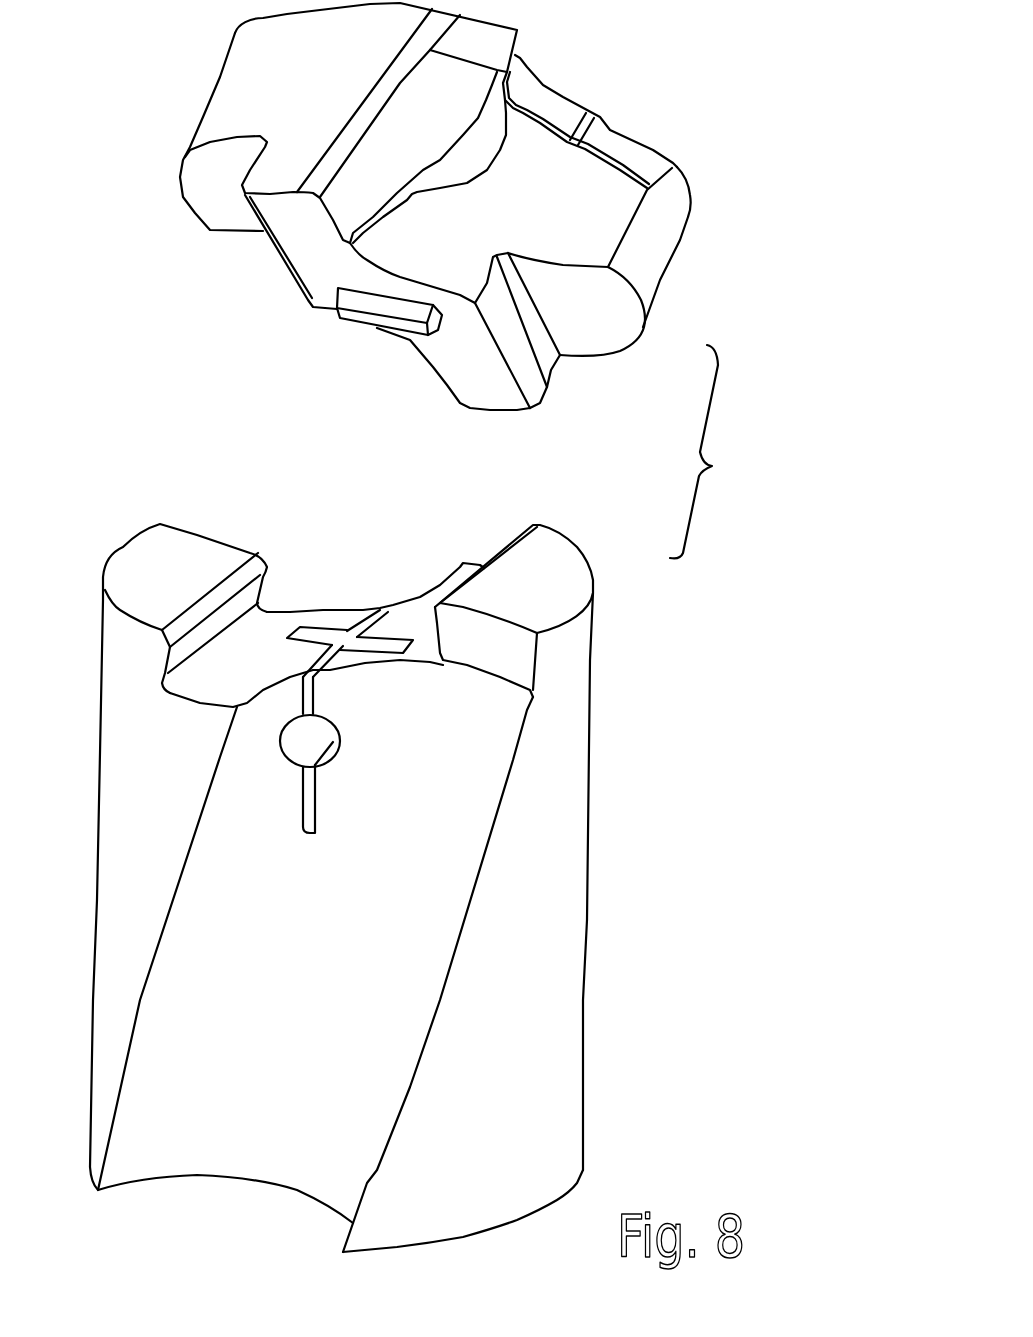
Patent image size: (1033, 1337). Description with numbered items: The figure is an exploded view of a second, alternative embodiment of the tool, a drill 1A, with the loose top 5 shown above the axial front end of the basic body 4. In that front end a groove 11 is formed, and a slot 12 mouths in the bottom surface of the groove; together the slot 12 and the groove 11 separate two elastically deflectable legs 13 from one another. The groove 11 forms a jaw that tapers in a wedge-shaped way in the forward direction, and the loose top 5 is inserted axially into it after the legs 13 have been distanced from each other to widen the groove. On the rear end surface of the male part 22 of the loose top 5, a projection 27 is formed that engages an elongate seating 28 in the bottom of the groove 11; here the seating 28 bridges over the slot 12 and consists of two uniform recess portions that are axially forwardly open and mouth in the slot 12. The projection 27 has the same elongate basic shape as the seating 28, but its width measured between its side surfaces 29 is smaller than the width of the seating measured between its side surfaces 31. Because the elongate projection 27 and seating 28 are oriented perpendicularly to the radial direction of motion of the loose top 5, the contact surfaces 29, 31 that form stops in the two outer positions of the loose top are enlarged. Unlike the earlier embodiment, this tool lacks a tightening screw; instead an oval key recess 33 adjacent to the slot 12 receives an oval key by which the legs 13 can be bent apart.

The drill 1A is at (168, 380).
The loose top 5 is at (725, 206).
The basic body 4 is at (590, 890).
The groove 11 is at (265, 607).
The slot 12 is at (312, 795).
The elastically deflectable legs 13 is at (118, 730).
The male part 22 is at (492, 412).
The projection 27 is at (355, 318).
The seating 28 is at (324, 628).
The side surfaces of the projection 29 is at (403, 308).
The side surfaces of the seating 31 is at (387, 643).
The key recess 33 is at (288, 746).